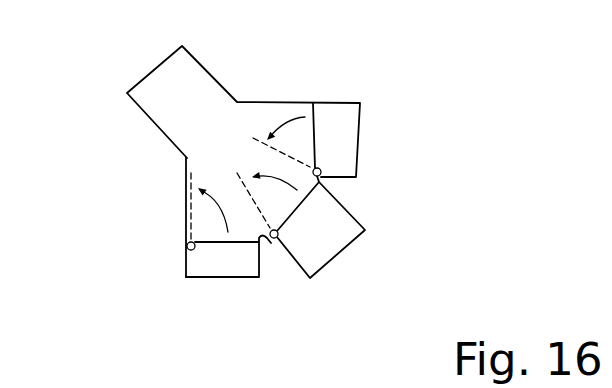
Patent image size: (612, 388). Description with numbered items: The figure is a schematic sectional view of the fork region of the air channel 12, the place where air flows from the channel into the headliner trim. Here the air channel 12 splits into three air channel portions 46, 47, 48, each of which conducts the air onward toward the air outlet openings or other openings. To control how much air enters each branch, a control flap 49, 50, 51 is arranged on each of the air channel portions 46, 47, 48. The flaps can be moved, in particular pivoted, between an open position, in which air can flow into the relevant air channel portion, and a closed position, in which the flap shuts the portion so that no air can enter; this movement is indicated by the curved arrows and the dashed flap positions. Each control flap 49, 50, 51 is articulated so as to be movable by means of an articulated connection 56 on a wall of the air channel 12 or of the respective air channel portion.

The air channel 12 is at (155, 160).
The air channel portion 46 is at (205, 265).
The air channel portion 47 is at (335, 225).
The air channel portion 48 is at (350, 127).
The control flap 49 is at (208, 240).
The control flap 50 is at (287, 218).
The control flap 51 is at (313, 127).
The articulated connection 56 is at (187, 247).